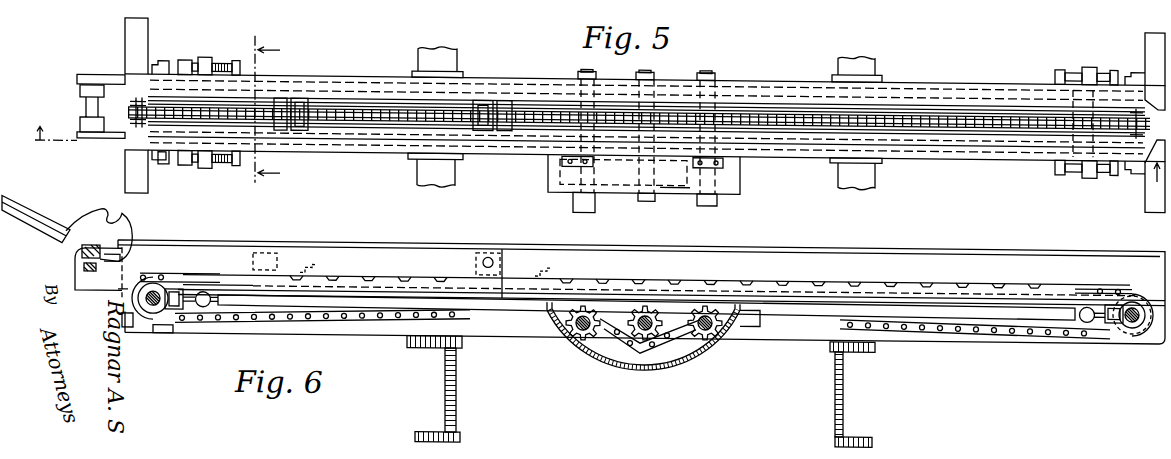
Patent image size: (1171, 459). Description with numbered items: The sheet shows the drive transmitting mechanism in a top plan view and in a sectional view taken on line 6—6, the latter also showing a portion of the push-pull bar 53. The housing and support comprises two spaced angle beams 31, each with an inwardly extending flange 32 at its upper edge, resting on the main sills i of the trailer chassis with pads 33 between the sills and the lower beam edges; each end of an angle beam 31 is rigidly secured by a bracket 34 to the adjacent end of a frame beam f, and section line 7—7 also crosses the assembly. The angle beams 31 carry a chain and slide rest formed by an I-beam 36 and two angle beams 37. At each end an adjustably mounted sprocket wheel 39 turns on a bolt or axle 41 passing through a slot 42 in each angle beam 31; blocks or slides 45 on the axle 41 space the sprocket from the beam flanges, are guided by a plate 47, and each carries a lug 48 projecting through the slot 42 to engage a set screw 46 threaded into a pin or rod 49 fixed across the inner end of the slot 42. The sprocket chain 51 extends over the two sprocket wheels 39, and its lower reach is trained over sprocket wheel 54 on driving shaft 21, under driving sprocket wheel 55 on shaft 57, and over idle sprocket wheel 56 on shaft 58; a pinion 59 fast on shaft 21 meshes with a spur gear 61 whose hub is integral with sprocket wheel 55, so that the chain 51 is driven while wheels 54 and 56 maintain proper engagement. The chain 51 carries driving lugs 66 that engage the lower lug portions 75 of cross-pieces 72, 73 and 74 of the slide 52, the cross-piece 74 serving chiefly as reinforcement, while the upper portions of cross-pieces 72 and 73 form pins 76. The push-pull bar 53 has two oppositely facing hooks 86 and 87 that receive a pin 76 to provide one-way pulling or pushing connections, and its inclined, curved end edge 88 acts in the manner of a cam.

In FIG. 5, the driving shaft 21 is at (582, 198).
In FIG. 6, the driving shaft 21 is at (578, 334).
In FIG. 5, the angle beam 31 is at (913, 80).
In FIG. 6, the angle beam 31 is at (812, 249).
In FIG. 5, the inwardly extending flange 32 is at (987, 81).
In FIG. 6, the inwardly extending flange 32 is at (912, 245).
In FIG. 5, the pad 33 is at (462, 67).
In FIG. 6, the pad 33 is at (460, 338).
In FIG. 5, the bracket 34 is at (153, 60).
In FIG. 6, the I-beam 36 is at (1045, 281).
In FIG. 6, the angle beam 37 is at (242, 297).
In FIG. 5, the sprocket wheel 39 is at (150, 120).
In FIG. 6, the sprocket wheel 39 is at (160, 330).
In FIG. 5, the bolt or axle 41 is at (158, 156).
In FIG. 6, the bolt or axle 41 is at (143, 310).
In FIG. 6, the slot 42 is at (198, 307).
In FIG. 6, the block or slide 45 is at (128, 299).
In FIG. 5, the set screw 46 is at (234, 58).
In FIG. 6, the plate or bar 47 is at (175, 328).
In FIG. 5, the lug 48 is at (185, 60).
In FIG. 6, the lug 48 is at (178, 286).
In FIG. 5, the pin or rod 49 is at (207, 58).
In FIG. 6, the pin or rod 49 is at (205, 290).
In FIG. 5, the sprocket chain 51 is at (367, 99).
In FIG. 6, the sprocket chain 51 is at (321, 324).
In FIG. 5, the slide or arm 52 is at (98, 72).
In FIG. 6, the slide or arm 52 is at (166, 248).
In FIG. 6, the push-pull bar 53 is at (37, 226).
In FIG. 6, the sprocket wheel 54 is at (591, 332).
In FIG. 6, the sprocket wheel 55 is at (694, 332).
In FIG. 6, the sprocket wheel 56 is at (710, 347).
In FIG. 5, the shaft 57 is at (645, 193).
In FIG. 6, the shaft 57 is at (645, 340).
In FIG. 5, the shaft 58 is at (706, 194).
In FIG. 6, the shaft 58 is at (742, 316).
In FIG. 5, the pinion or gear 59 is at (549, 169).
In FIG. 5, the spur gear 61 is at (666, 180).
In FIG. 5, the driving lug 66 is at (310, 96).
In FIG. 6, the driving lug 66 is at (125, 320).
In FIG. 5, the cross-piece 72 is at (88, 91).
In FIG. 6, the cross-piece 72 is at (80, 249).
In FIG. 5, the cross-piece 73 is at (491, 128).
In FIG. 6, the cross-piece 73 is at (505, 259).
In FIG. 5, the cross-piece 74 is at (293, 120).
In FIG. 6, the cross-piece 74 is at (280, 258).
In FIG. 6, the lower portion or lug 75 is at (88, 272).
In FIG. 5, the pin 76 is at (84, 106).
In FIG. 6, the pin 76 is at (80, 257).
In FIG. 6, the hook 86 is at (85, 265).
In FIG. 6, the hook 87 is at (108, 214).
In FIG. 6, the end edge 88 is at (115, 258).
In FIG. 5, the frame beam f is at (125, 28).
In FIG. 5, the main sill i is at (441, 47).
In FIG. 6, the main sill i is at (448, 390).
In FIG. 5, the section line 6- 6 is at (590, 162).
In FIG. 5, the section line 7- 7 is at (265, 111).